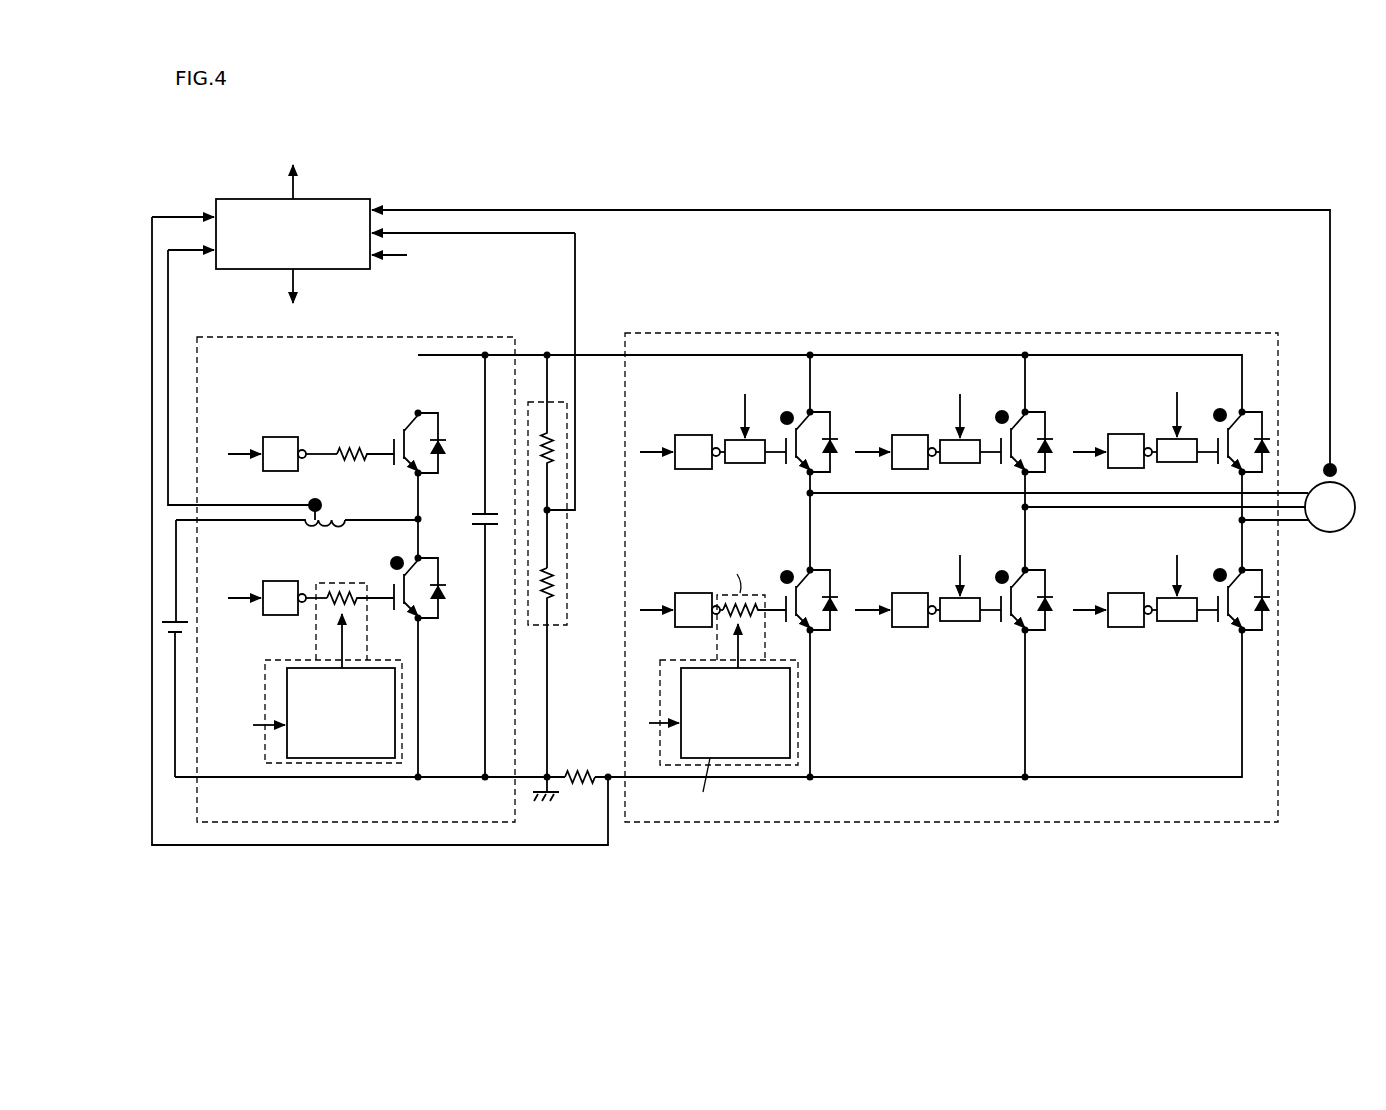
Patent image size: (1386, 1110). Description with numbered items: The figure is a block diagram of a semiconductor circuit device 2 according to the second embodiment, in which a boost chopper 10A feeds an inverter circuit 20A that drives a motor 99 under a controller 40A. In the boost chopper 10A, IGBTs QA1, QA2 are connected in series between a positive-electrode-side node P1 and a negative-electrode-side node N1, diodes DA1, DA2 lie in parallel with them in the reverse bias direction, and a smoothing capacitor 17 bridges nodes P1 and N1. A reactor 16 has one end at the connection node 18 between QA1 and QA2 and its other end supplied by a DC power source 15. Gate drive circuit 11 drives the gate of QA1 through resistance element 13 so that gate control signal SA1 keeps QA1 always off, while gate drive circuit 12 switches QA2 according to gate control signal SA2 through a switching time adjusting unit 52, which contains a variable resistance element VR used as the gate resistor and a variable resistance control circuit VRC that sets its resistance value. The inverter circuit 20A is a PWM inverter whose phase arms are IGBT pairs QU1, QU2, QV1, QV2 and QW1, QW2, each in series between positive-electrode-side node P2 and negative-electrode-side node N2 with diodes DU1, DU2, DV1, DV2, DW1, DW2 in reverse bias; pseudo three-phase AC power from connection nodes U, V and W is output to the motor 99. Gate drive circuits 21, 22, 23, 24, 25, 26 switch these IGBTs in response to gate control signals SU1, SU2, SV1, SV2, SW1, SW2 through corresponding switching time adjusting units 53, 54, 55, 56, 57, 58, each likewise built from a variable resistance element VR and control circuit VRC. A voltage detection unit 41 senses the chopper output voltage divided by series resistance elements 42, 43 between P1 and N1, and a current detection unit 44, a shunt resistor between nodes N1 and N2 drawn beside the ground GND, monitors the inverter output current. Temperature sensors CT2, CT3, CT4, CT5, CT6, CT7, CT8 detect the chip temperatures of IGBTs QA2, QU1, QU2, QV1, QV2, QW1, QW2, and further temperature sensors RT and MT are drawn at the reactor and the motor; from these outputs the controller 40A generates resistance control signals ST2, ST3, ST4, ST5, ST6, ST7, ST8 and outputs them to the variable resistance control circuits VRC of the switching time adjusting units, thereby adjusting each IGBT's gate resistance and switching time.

The semiconductor circuit device 2 is at (1193, 166).
The boost chopper 10A is at (477, 335).
The inverter circuit 20A is at (735, 333).
The controller 40A is at (337, 197).
The gate drive circuit 11 is at (280, 437).
The gate drive circuit 12 is at (273, 616).
The resistance element 13 is at (352, 447).
The DC power source 15 is at (192, 628).
The reactor 16 is at (320, 532).
The capacitor 17 is at (492, 512).
The connection node 18 is at (423, 518).
The gate drive circuit 21 is at (693, 435).
The gate drive circuit 22 is at (693, 593).
The gate drive circuit 23 is at (910, 435).
The gate drive circuit 24 is at (910, 593).
The gate drive circuit 25 is at (1126, 434).
The gate drive circuit 26 is at (1126, 593).
The voltage detection unit 41 is at (573, 565).
The resistance element 42 is at (552, 443).
The resistance element 43 is at (552, 582).
The current detection unit 44 is at (578, 772).
The switching time adjusting unit 52 is at (307, 685).
The switching time adjusting unit 53 is at (728, 440).
The switching time adjusting unit 54 is at (704, 686).
The switching time adjusting unit 55 is at (945, 440).
The switching time adjusting unit 56 is at (945, 598).
The switching time adjusting unit 57 is at (1163, 439).
The switching time adjusting unit 58 is at (1163, 598).
The motor 99 is at (1327, 533).
The IGBT QA1 is at (397, 463).
The IGBT QA2 is at (395, 615).
The diode DA1 is at (452, 445).
The diode DA2 is at (452, 590).
The IGBT QU1 is at (785, 463).
The IGBT QU2 is at (787, 618).
The IGBT QV1 is at (1000, 463).
The IGBT QV2 is at (1000, 620).
The IGBT QW1 is at (1218, 463).
The IGBT QW2 is at (1218, 620).
The diode DU1 is at (838, 443).
The diode DU2 is at (838, 601).
The diode DV1 is at (1053, 443).
The diode DV2 is at (1053, 601).
The diode DW1 is at (1273, 438).
The diode DW2 is at (1273, 598).
The temperature sensor CT2 is at (397, 551).
The temperature sensor CT3 is at (786, 407).
The temperature sensor CT4 is at (786, 566).
The temperature sensor CT5 is at (1002, 406).
The temperature sensor CT6 is at (1002, 565).
The temperature sensor CT7 is at (1219, 404).
The temperature sensor CT8 is at (1219, 564).
The temperature sensor RT is at (315, 499).
The variable resistance element VR is at (340, 592).
The variable resistance control circuit VRC is at (310, 758).
The temperature sensor MT is at (1347, 470).
The positive-electrode-side node P1 is at (484, 357).
The positive-electrode-side node P2 is at (810, 355).
The negative-electrode-side node N1 is at (480, 780).
The negative-electrode-side node N2 is at (810, 782).
The connection node U is at (803, 495).
The connection node V is at (1022, 507).
The connection node W is at (1238, 520).
The ground GND is at (548, 803).
The gate control signal SA1 is at (240, 447).
The gate control signal SA2 is at (240, 592).
The gate control signal SU1 is at (642, 447).
The gate control signal SU2 is at (642, 605).
The gate control signal SV1 is at (867, 446).
The gate control signal SV2 is at (867, 605).
The gate control signal SW1 is at (1081, 446).
The gate control signal SW2 is at (1081, 605).
The resistance control signal ST2 is at (248, 725).
The resistance control signal ST3 is at (746, 405).
The resistance control signal ST4 is at (644, 724).
The resistance control signal ST5 is at (962, 405).
The resistance control signal ST6 is at (962, 563).
The resistance control signal ST7 is at (1179, 404).
The resistance control signal ST8 is at (1179, 563).